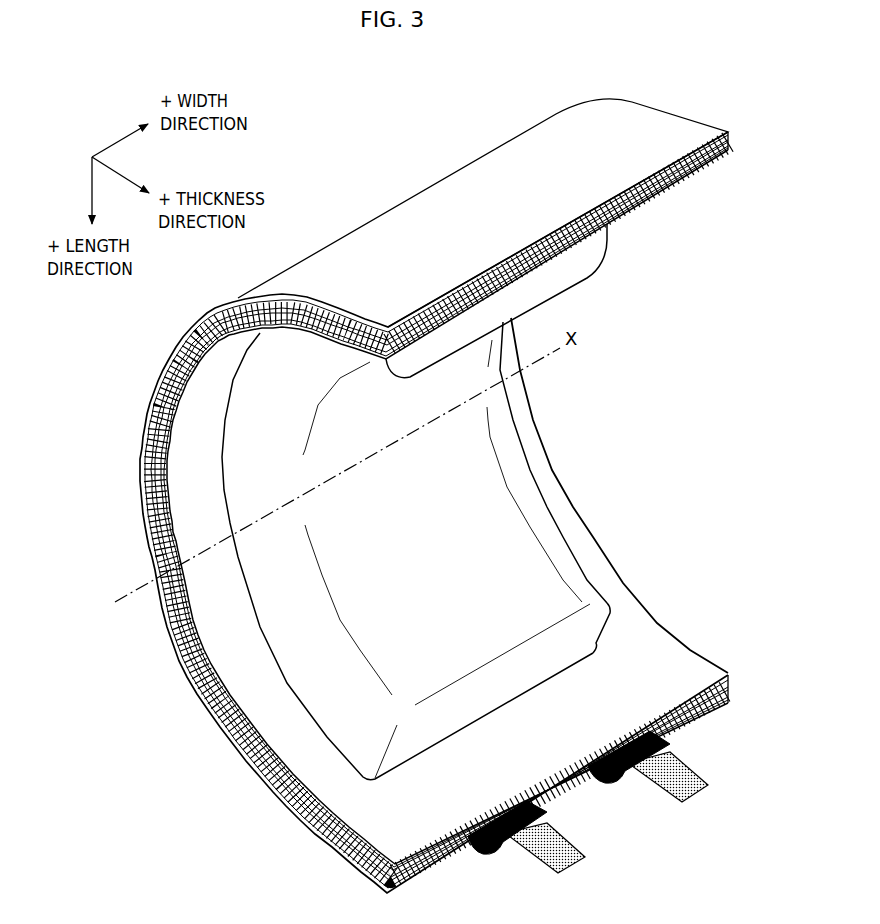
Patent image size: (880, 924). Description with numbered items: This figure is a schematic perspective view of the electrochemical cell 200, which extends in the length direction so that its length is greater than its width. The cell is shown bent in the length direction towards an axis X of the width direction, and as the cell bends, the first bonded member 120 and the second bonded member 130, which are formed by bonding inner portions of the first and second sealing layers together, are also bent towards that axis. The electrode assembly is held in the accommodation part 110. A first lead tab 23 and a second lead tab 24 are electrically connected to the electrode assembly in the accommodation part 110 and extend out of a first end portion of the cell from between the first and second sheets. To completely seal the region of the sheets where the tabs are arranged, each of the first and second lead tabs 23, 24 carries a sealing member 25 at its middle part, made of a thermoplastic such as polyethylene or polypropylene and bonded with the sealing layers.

The electrochemical cell 200 is at (582, 472).
The accommodation part 110 is at (313, 645).
The first bonded member 120 is at (587, 550).
The second bonded member 130 is at (211, 616).
The first lead tab 23 is at (703, 792).
The second lead tab 24 is at (577, 864).
The sealing member 25 is at (490, 852).